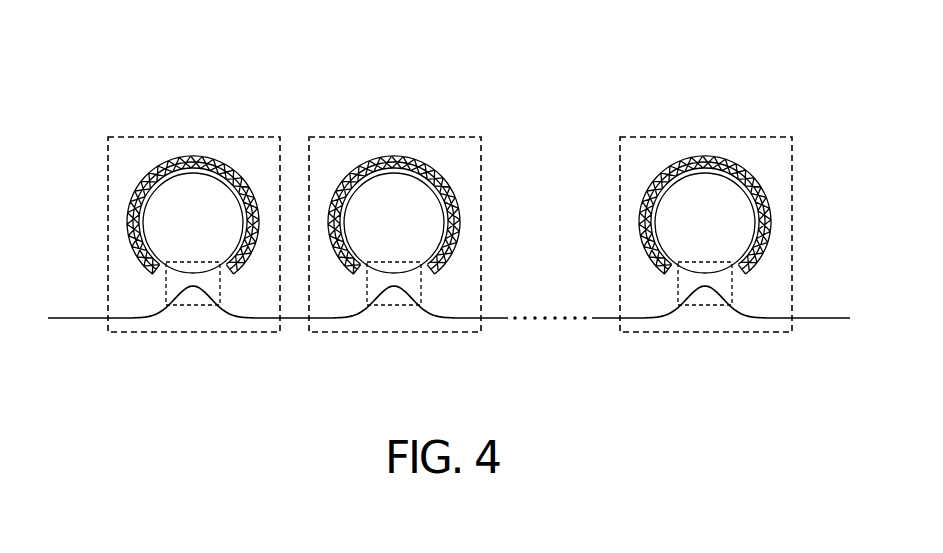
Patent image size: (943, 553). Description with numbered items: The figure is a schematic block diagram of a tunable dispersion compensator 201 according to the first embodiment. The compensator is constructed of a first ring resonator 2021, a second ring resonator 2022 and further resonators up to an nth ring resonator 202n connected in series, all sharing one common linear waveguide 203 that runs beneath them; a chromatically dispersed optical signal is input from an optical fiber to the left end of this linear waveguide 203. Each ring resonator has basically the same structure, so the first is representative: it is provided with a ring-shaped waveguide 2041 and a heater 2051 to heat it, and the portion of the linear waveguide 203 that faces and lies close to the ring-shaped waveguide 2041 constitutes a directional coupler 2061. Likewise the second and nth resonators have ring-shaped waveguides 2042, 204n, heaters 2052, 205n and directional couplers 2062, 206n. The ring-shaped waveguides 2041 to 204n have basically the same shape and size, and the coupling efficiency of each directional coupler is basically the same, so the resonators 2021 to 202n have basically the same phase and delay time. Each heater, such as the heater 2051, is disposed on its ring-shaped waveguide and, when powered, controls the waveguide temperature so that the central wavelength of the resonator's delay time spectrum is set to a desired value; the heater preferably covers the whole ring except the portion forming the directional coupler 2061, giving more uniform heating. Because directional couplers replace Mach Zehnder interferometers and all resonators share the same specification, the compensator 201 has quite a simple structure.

The tunable dispersion compensator 201 is at (792, 96).
The first ring resonator 2021 is at (187, 137).
The second ring resonator 2022 is at (388, 137).
The nth ring resonator 202n is at (699, 137).
The linear waveguide 203 is at (77, 317).
The ring-shaped waveguide 2041 is at (155, 180).
The ring-shaped waveguide 2042 is at (356, 180).
The ring-shaped waveguide 204n is at (667, 180).
The heater 2051 is at (127, 222).
The heater 2052 is at (460, 217).
The heater 205n is at (772, 215).
The directional coupler 2061 is at (195, 305).
The directional coupler 2062 is at (396, 305).
The directional coupler 206n is at (707, 305).